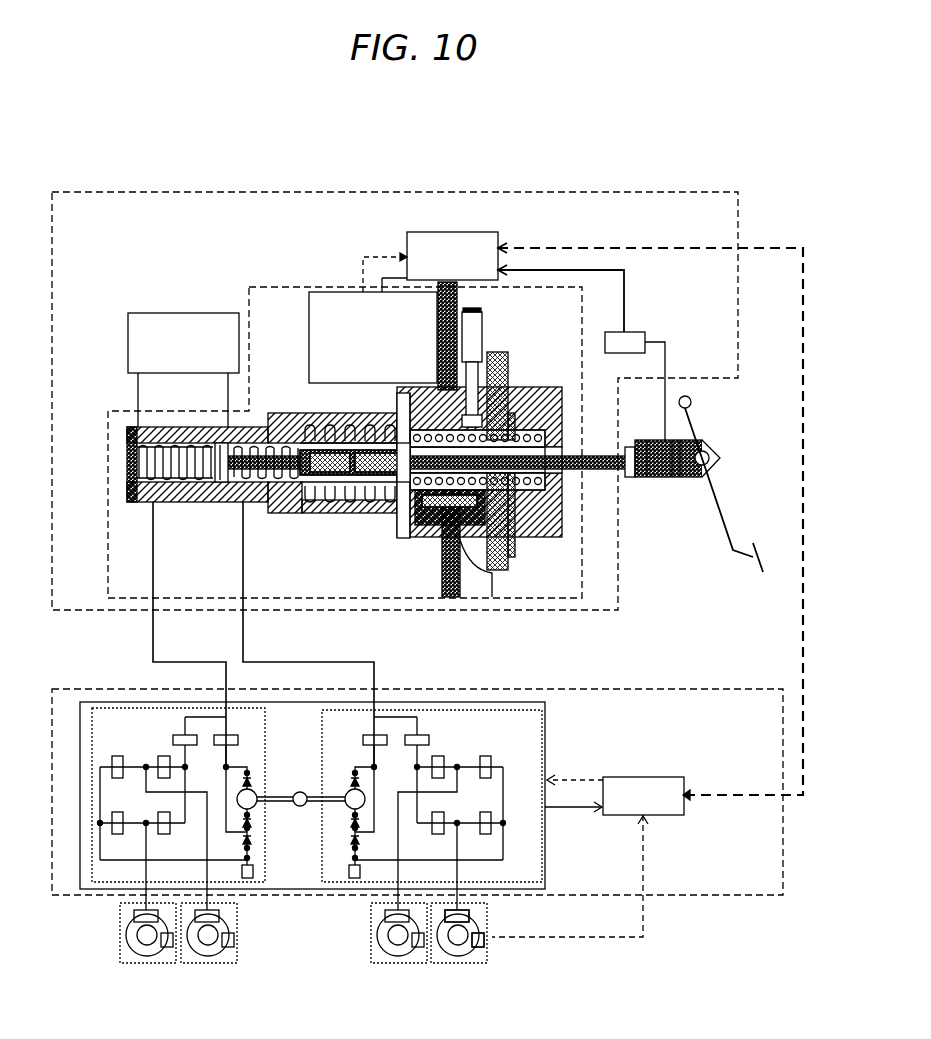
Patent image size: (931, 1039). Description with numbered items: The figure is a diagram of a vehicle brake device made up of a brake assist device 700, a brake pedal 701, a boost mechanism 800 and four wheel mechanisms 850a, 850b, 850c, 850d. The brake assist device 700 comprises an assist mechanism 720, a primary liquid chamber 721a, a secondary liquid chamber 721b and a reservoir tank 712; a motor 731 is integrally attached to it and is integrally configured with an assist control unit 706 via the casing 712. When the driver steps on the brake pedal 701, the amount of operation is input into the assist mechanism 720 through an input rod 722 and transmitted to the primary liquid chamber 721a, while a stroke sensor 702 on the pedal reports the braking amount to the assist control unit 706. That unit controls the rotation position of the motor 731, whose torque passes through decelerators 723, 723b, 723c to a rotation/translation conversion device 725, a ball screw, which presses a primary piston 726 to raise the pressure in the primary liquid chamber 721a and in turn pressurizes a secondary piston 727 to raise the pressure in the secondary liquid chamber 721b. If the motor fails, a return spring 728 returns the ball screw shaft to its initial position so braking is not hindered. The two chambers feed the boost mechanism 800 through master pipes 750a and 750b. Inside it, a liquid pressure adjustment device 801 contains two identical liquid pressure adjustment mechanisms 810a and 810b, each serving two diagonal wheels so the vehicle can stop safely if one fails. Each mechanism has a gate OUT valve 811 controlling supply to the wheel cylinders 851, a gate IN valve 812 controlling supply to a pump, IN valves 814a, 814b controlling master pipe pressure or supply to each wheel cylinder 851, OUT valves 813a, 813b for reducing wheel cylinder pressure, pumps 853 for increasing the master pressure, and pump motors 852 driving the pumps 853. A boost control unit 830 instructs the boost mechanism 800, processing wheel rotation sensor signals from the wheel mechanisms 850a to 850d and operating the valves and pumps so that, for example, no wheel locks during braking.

The brake assist device 700 is at (196, 160).
The brake pedal 701 is at (728, 510).
The stroke sensor 702 is at (635, 332).
The assist control unit 706 is at (460, 245).
The reservoir tank 712 is at (170, 313).
The assist mechanism 720 is at (293, 258).
The primary liquid chamber 721a is at (213, 443).
The secondary liquid chamber 721b is at (150, 440).
The input rod 722 is at (578, 455).
The decelerator 723 is at (482, 321).
The decelerator 723b is at (508, 375).
The decelerator 723c is at (450, 597).
The rotation/translation conversion device 725 is at (447, 500).
The primary piston 726 is at (290, 513).
The secondary piston 727 is at (215, 490).
The return spring 728 is at (358, 515).
The motor 731 is at (327, 292).
The master pipe 750a is at (324, 652).
The master pipe 750b is at (216, 652).
The boost mechanism 800 is at (614, 689).
The liquid pressure adjustment device 801 is at (494, 702).
The liquid pressure adjustment mechanism 810a is at (575, 681).
The liquid pressure adjustment mechanism 810b is at (97, 715).
The gate OUT valve 811 is at (425, 735).
The gate IN valve 812 is at (363, 740).
The OUT valve 813a is at (488, 757).
The OUT valve 813b is at (486, 812).
The IN valve 814a is at (440, 757).
The IN valve 814b is at (435, 834).
The boost control unit 830 is at (645, 777).
The wheel mechanism 850a is at (437, 963).
The wheel mechanism 850b is at (375, 963).
The wheel mechanism 850c is at (230, 963).
The wheel mechanism 850d is at (165, 963).
The wheel cylinder 851 is at (470, 916).
The pump motor 852 is at (300, 806).
The pump 853 is at (348, 790).